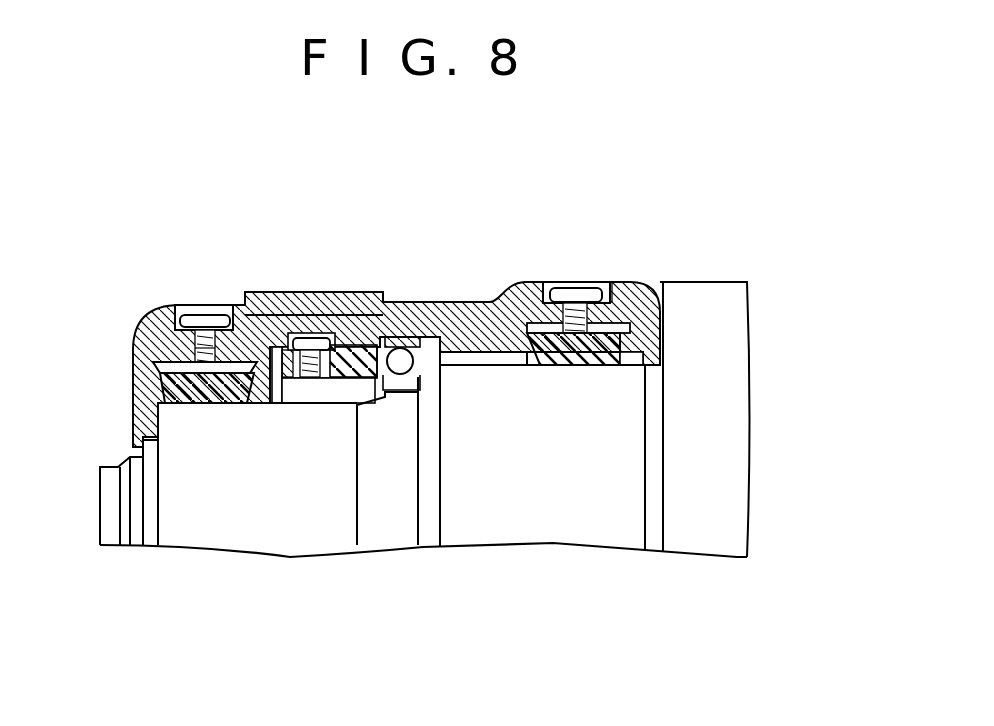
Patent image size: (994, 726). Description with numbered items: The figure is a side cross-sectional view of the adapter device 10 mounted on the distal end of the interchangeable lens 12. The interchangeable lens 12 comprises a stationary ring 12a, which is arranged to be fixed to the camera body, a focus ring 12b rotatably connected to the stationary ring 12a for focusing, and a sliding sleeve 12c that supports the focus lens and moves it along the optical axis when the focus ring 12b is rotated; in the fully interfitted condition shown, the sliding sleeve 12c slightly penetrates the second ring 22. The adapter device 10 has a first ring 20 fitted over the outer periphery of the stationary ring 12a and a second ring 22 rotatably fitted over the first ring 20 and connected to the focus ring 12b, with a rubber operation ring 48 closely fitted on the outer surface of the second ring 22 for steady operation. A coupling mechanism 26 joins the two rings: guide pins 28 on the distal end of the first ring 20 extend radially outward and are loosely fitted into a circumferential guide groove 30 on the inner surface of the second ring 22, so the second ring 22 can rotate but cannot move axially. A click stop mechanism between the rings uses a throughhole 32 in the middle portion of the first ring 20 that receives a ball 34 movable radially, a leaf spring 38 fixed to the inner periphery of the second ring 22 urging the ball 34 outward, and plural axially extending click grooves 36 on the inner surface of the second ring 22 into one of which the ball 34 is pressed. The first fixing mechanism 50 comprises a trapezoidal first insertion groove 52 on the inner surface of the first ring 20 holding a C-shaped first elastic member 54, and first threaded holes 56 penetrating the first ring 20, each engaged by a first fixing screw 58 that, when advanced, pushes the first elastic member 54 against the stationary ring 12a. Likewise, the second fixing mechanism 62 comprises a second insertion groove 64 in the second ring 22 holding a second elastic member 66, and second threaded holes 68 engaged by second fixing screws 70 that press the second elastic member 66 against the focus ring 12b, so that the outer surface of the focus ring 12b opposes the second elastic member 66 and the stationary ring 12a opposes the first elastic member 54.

The adapter device 10 is at (150, 312).
The interchangeable lens 12 is at (423, 520).
The stationary ring 12a is at (542, 488).
The focus ring 12b is at (300, 527).
The sliding sleeve 12c is at (128, 540).
The first ring 20 is at (638, 295).
The second ring 22 is at (433, 314).
The coupling mechanism 26 is at (327, 303).
The guide pin 28 is at (305, 343).
The guide groove 30 is at (340, 347).
The throughhole 32 is at (441, 356).
The ball 34 is at (400, 348).
The click groove 36 is at (416, 340).
The leaf spring 38 is at (390, 390).
The operation ring 48 is at (262, 296).
The first fixing mechanism 50 is at (580, 370).
The first insertion groove 52 is at (630, 327).
The first elastic member 54 is at (608, 355).
The first threaded hole 56 is at (614, 292).
The first fixing screw 58 is at (572, 292).
The second fixing mechanism 62 is at (208, 410).
The second insertion groove 64 is at (158, 364).
The second elastic member 66 is at (160, 388).
The second threaded hole 68 is at (195, 352).
The second fixing screw 70 is at (205, 316).